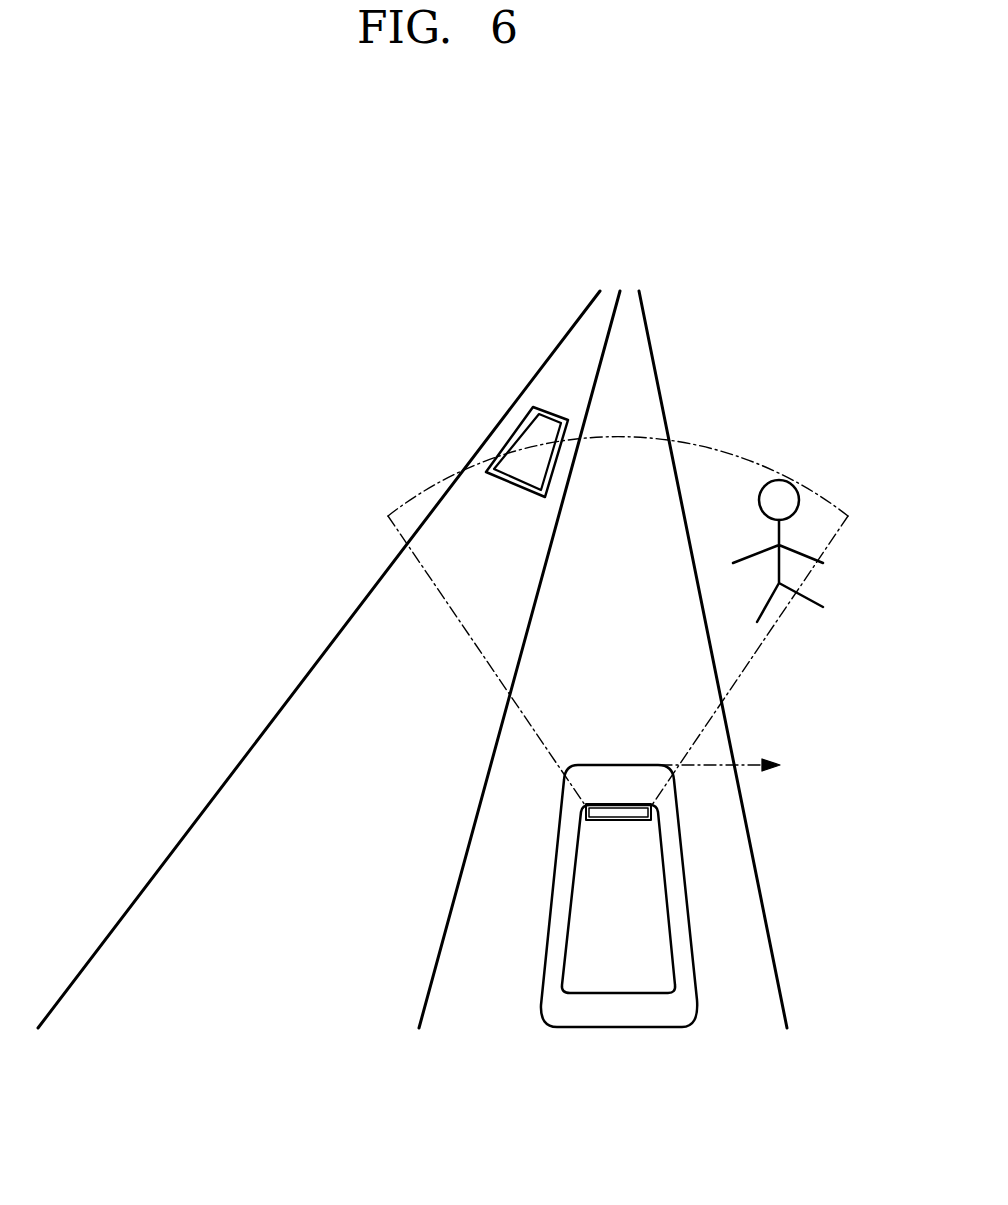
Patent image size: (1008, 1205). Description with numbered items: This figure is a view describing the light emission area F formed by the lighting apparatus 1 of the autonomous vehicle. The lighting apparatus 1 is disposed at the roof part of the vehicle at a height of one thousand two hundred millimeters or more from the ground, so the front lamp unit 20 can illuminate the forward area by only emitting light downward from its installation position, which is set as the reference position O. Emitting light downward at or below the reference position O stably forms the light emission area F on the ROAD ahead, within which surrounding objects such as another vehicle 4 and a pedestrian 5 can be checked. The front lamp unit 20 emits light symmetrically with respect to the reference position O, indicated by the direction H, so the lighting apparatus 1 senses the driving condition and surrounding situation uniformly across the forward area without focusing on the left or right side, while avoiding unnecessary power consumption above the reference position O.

The lighting apparatus 1 is at (690, 918).
The another vehicle 4 is at (503, 433).
The pedestrian 5 is at (808, 550).
The front lamp unit 20 is at (610, 815).
The reference position O is at (617, 765).
The horizontal direction H is at (720, 752).
The light emission area F is at (763, 648).
The road ROAD is at (752, 838).